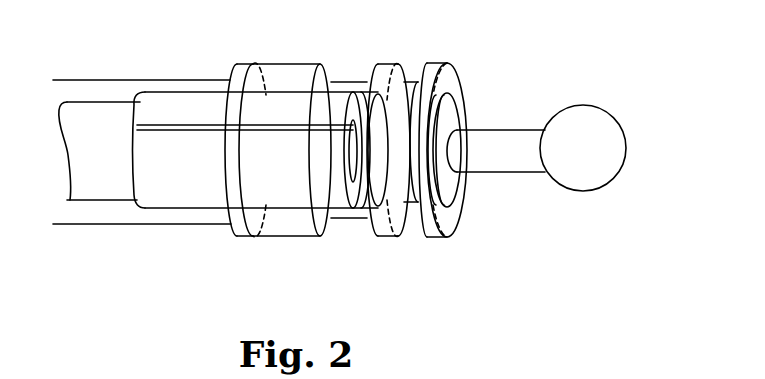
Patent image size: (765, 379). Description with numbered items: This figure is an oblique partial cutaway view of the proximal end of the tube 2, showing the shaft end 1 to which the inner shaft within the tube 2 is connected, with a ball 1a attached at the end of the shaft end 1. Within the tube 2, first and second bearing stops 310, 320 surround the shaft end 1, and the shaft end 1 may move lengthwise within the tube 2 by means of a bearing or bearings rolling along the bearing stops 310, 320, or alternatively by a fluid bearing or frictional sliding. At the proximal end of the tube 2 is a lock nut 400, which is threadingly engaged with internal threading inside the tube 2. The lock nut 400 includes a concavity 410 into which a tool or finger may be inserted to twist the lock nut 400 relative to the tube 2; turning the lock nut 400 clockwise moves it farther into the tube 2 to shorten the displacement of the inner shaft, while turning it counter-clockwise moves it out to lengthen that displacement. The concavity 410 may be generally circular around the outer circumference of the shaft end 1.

The shaft end 1 is at (515, 140).
The ball 1a is at (625, 137).
The tube 2 is at (111, 225).
The first bearing stop 310 is at (157, 100).
The second bearing stop 320 is at (183, 195).
The lock nut 400 is at (382, 217).
The concavity 410 is at (458, 217).